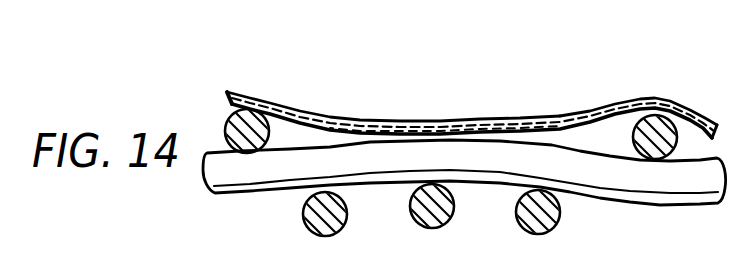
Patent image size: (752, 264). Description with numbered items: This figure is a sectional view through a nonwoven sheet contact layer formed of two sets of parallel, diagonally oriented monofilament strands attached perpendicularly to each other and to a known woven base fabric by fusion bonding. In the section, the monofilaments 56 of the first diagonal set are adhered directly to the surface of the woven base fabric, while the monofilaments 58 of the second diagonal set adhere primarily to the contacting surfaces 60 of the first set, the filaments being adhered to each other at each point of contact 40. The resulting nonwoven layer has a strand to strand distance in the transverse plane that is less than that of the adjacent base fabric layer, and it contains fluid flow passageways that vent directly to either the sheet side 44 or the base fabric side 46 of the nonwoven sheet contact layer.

The point of contact 40 is at (623, 106).
The sheet side 44 is at (365, 120).
The base fabric side 46 is at (293, 117).
The monofilaments 56 is at (538, 142).
The monofilaments 58 is at (557, 125).
The contacting surfaces 60 is at (575, 122).